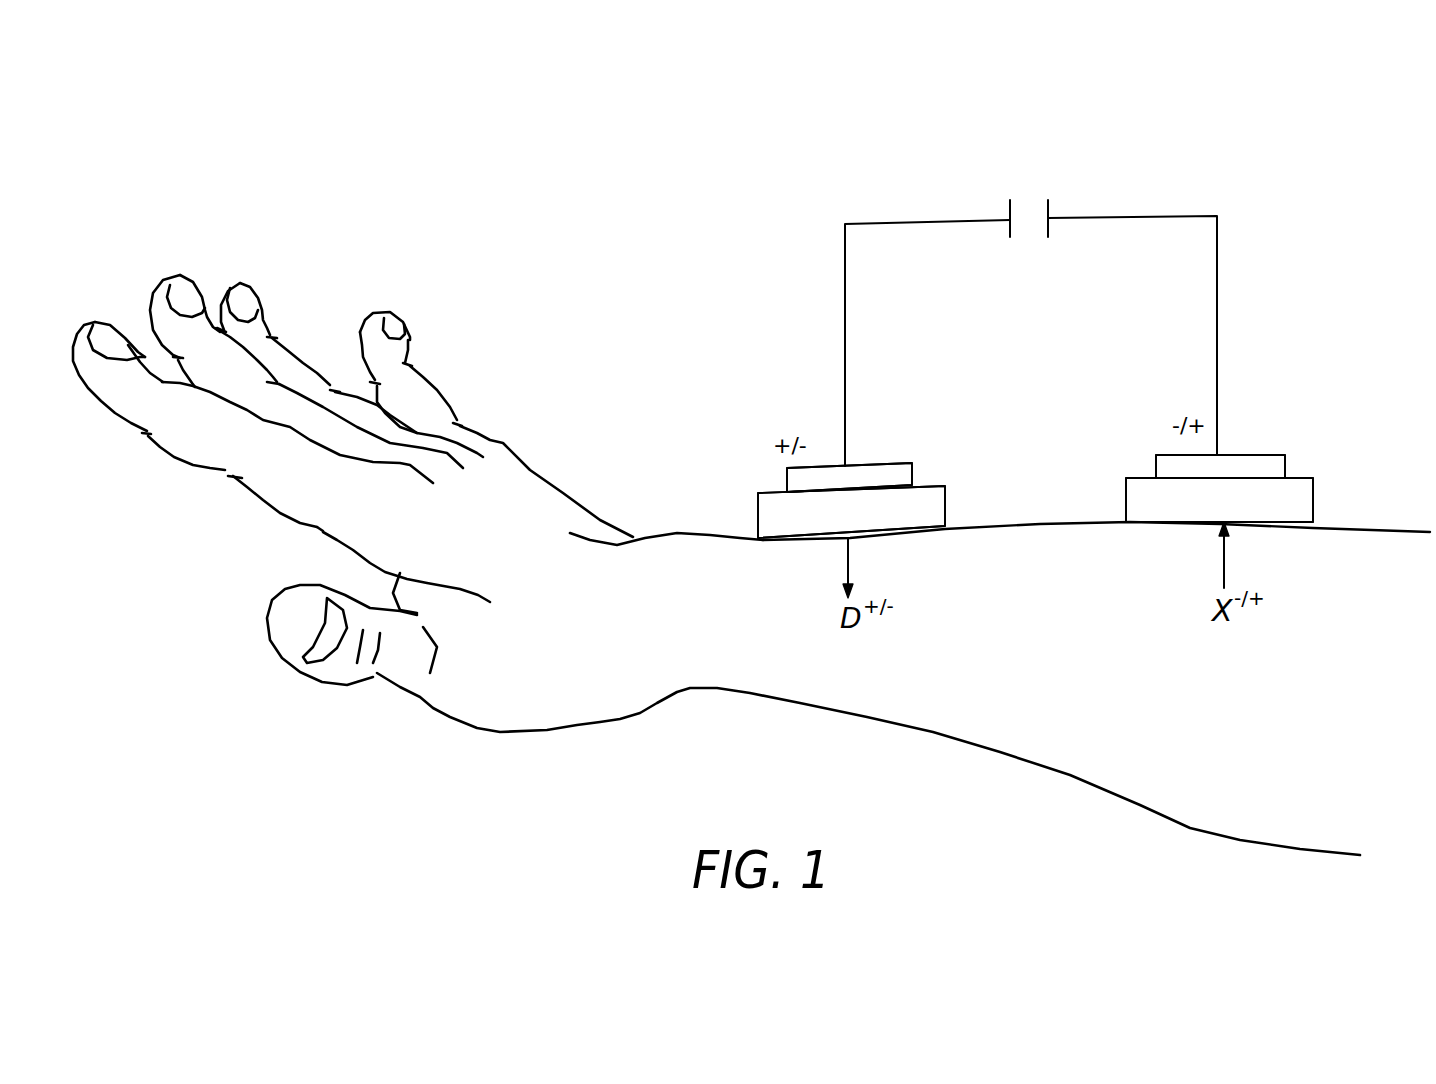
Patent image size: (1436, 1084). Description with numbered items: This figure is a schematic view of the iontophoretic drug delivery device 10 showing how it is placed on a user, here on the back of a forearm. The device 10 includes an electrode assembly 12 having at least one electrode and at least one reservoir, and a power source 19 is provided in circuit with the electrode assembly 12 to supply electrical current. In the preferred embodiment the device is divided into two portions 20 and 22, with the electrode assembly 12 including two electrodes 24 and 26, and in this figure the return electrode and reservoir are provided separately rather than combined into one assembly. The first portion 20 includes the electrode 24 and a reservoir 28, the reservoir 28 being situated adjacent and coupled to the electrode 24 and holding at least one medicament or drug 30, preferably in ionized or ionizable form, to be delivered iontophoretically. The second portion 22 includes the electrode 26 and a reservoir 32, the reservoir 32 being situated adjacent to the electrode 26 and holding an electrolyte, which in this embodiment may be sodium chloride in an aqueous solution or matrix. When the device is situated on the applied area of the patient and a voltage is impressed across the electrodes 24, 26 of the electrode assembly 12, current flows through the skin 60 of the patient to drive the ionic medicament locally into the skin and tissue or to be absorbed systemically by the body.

The iontophoretic drug delivery device 10 is at (712, 257).
The electrode assembly 12 is at (925, 466).
The power source 19 is at (1050, 210).
The first portion 20 is at (732, 482).
The second portion 22 is at (1253, 434).
The electrode 24 is at (890, 473).
The electrode 26 is at (1183, 463).
The reservoir 28 is at (768, 518).
The medicament or drug 30 is at (860, 627).
The reservoir 32 is at (1293, 492).
The skin 60 is at (1398, 528).